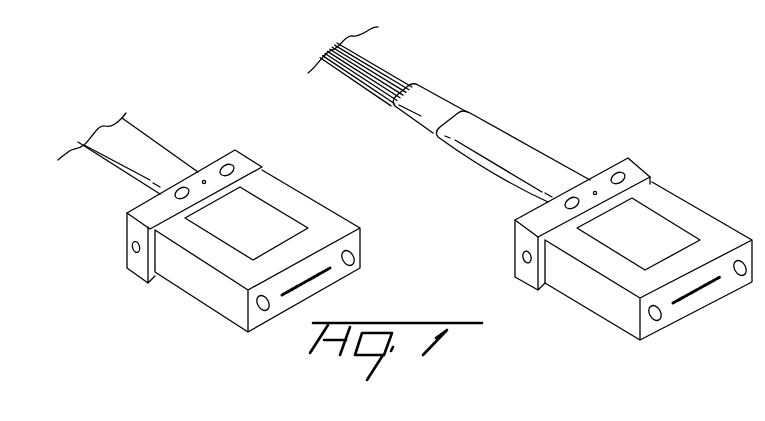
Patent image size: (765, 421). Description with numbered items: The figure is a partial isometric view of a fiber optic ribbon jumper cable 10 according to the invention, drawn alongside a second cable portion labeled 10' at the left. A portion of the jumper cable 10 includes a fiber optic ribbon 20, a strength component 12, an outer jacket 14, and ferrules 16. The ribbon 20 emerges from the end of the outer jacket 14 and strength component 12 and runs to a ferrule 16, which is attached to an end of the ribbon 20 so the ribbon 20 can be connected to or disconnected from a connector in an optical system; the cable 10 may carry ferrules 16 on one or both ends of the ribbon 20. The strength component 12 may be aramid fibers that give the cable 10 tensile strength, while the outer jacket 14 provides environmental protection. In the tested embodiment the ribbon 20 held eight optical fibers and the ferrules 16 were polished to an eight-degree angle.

The jumper cable 10 is at (482, 145).
The cable assembly (mating/second) 10' is at (132, 176).
The strength component 12 is at (412, 117).
The outer jacket 14 is at (487, 172).
The ferrule 16 is at (197, 302).
The fiber optic ribbon 20 is at (377, 82).